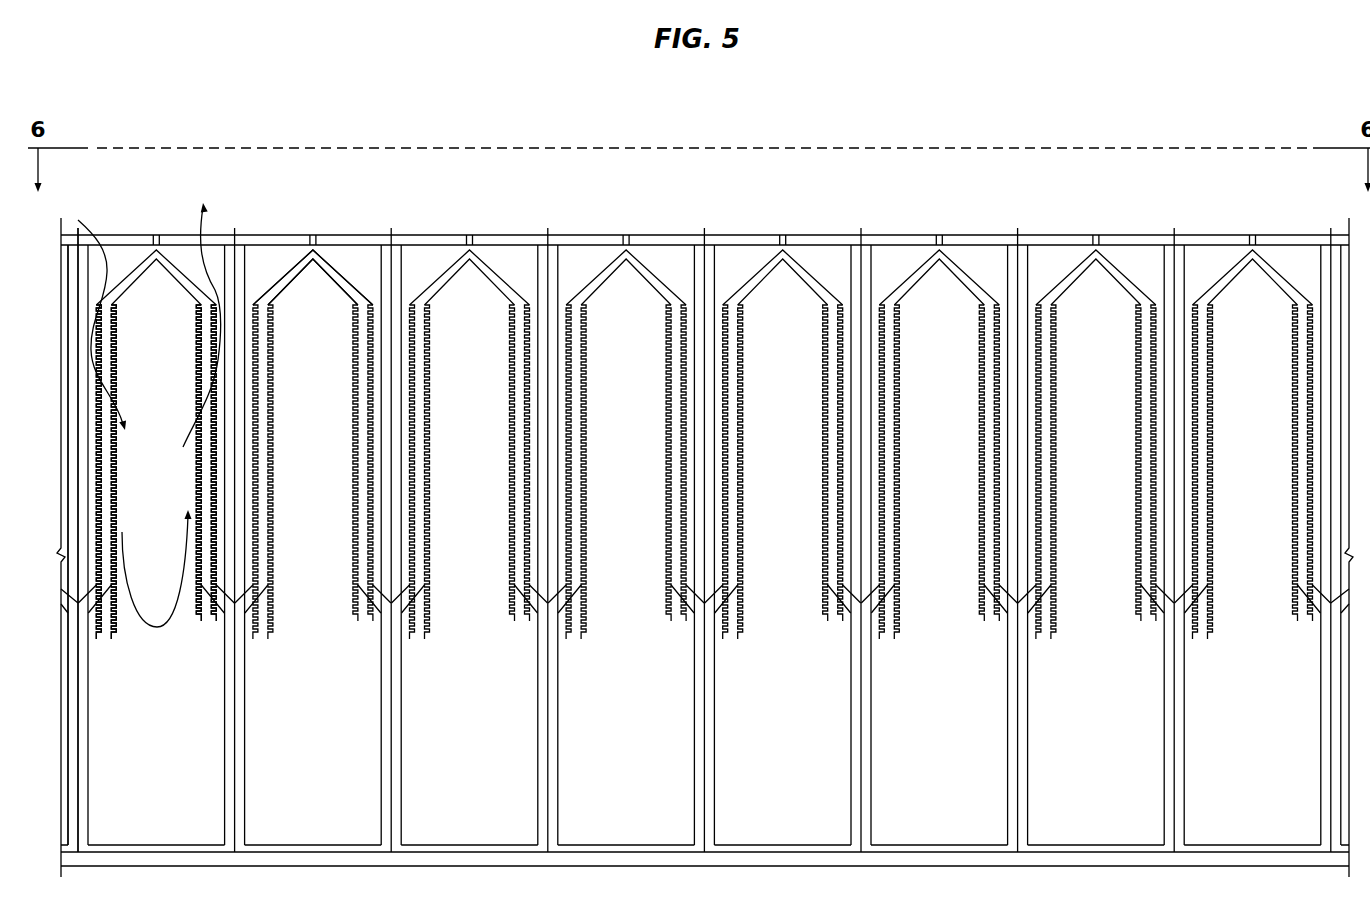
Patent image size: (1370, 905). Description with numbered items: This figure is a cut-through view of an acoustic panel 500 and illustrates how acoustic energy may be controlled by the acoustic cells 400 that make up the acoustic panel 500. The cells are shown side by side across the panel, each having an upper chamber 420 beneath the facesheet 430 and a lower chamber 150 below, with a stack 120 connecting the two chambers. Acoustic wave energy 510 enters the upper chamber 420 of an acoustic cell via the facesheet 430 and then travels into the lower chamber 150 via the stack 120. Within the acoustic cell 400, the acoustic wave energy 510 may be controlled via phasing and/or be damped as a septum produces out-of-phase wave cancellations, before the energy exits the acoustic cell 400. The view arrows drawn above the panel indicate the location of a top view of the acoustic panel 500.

The acoustic panel 500 is at (832, 102).
The acoustic wave energy 510 is at (97, 235).
The facesheet 430 is at (301, 256).
The upper chamber 420 is at (94, 272).
The stack 120 is at (112, 343).
The lower chamber 150 is at (172, 724).
The acoustic cell 400 is at (225, 806).